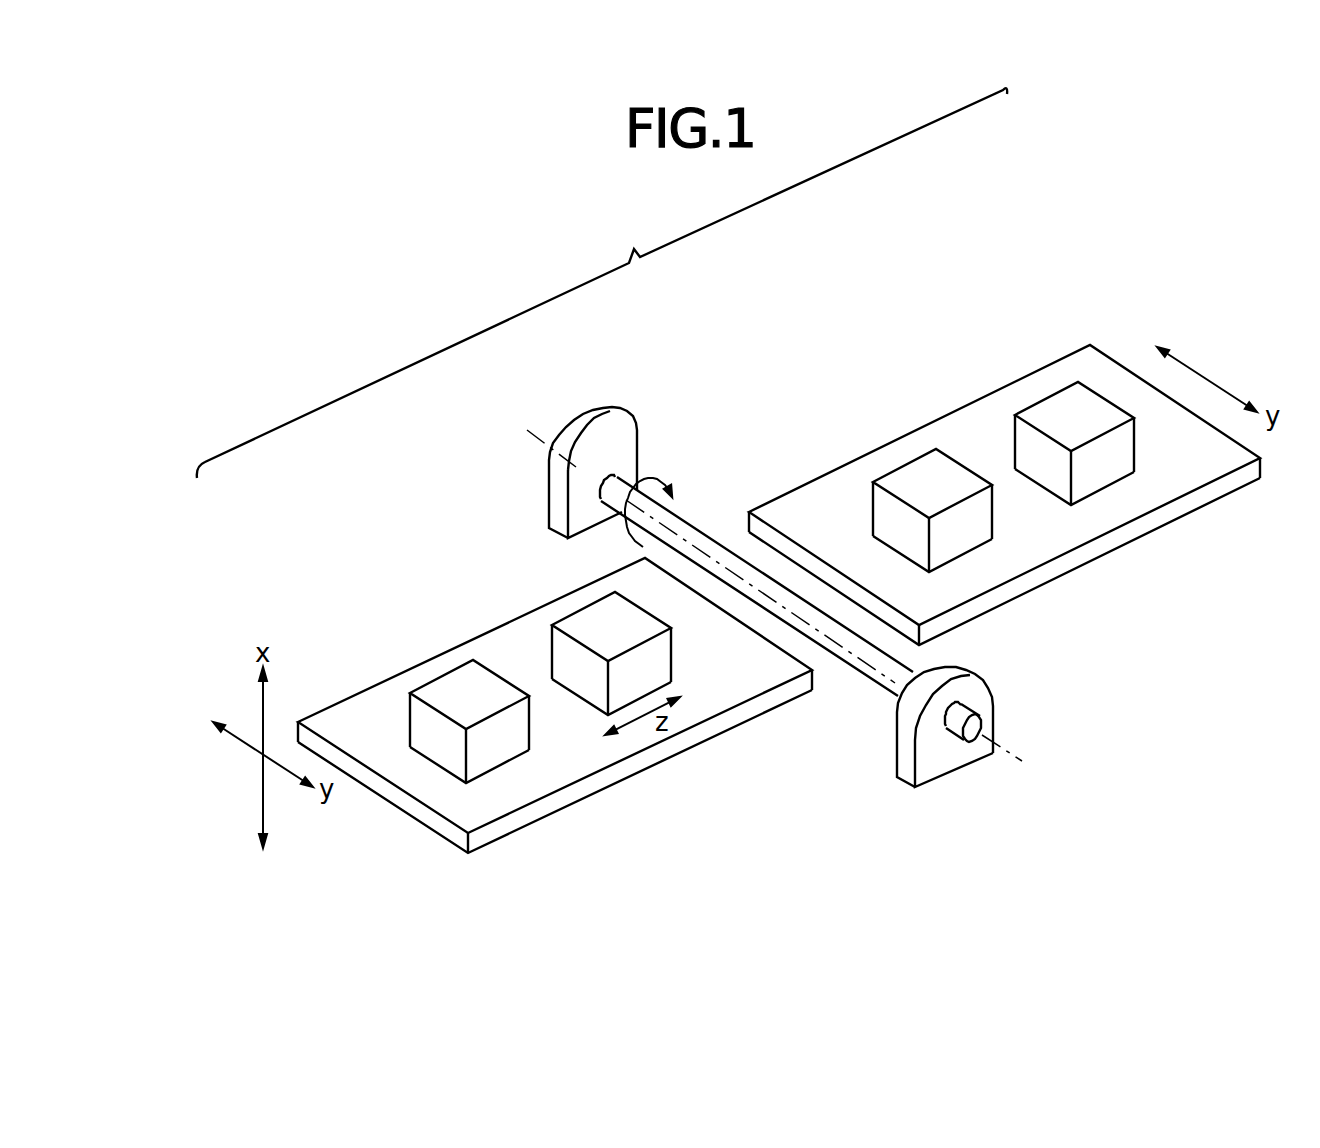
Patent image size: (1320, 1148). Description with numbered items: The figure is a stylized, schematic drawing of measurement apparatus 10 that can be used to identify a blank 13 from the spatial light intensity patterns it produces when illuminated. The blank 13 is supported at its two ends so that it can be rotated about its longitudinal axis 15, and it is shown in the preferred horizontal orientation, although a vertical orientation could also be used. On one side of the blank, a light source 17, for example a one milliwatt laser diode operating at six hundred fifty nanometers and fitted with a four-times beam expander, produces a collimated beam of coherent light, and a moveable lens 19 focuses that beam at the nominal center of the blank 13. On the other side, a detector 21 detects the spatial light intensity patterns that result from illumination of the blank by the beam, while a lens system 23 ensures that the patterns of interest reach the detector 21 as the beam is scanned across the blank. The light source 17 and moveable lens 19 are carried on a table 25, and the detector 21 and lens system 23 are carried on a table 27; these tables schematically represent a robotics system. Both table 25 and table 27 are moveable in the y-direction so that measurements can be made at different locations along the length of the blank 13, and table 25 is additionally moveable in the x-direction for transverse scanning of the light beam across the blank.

The measurement apparatus 10 is at (794, 652).
The blank 13 is at (692, 518).
The longitudinal axis 15 is at (897, 683).
The light source 17 is at (522, 720).
The moveable lens 19 is at (660, 655).
The detector 21 is at (1125, 440).
The lens system 23 is at (983, 512).
The table 25 is at (470, 807).
The table 27 is at (1172, 483).